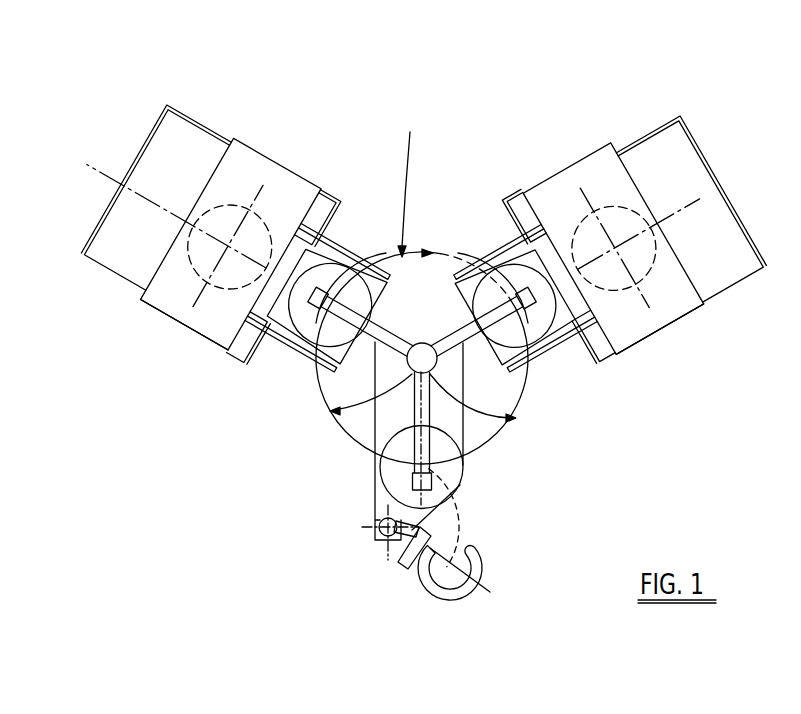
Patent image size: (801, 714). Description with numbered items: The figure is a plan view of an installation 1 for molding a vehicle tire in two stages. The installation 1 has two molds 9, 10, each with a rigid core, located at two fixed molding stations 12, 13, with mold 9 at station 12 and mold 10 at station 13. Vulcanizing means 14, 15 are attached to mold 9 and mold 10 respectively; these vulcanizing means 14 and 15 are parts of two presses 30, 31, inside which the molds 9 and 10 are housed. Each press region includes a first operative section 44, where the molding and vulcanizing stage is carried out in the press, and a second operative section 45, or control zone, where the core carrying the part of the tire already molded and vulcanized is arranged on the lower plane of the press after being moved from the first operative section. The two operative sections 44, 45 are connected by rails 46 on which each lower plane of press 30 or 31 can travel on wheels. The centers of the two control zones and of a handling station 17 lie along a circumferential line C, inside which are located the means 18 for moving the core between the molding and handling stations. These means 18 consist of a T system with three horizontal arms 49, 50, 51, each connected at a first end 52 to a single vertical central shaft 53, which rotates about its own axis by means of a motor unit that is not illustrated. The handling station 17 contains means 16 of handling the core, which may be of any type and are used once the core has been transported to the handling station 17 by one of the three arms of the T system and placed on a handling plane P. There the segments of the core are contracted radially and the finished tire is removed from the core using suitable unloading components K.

The installation 1 is at (670, 94).
The mold 9 is at (232, 203).
The mold 10 is at (613, 212).
The fixed molding station 12 is at (174, 134).
The fixed molding station 13 is at (678, 142).
The vulcanizing means 14 is at (272, 172).
The vulcanizing means 15 is at (588, 173).
The means of handling core 16 is at (453, 480).
The handling station 17 is at (375, 502).
The means for moving the core 18 is at (424, 332).
The press 30 is at (150, 298).
The press 31 is at (700, 303).
The first operative section 44 is at (303, 197).
The second operative section 45 is at (340, 228).
The rails 46 is at (280, 340).
The horizontal arm 49 is at (343, 302).
The horizontal arm 50 is at (482, 353).
The horizontal arm 51 is at (433, 400).
The first end 52 is at (483, 353).
The vertical central shaft 53 is at (340, 412).
The circumferential line C is at (343, 413).
The T system T is at (408, 180).
The handling plane P is at (452, 500).
The unloading components K is at (432, 596).